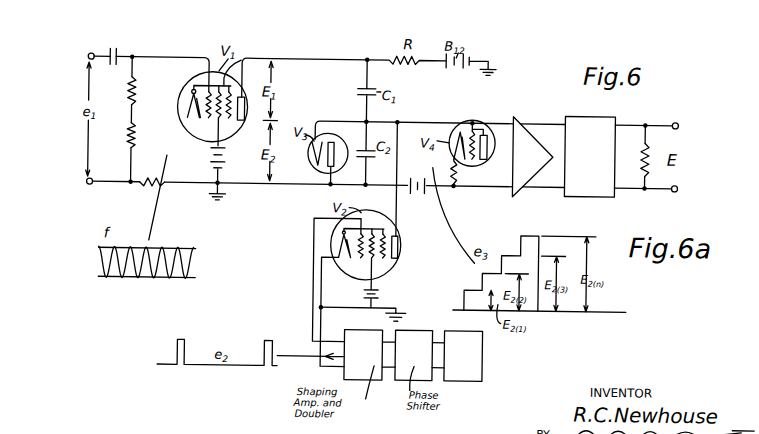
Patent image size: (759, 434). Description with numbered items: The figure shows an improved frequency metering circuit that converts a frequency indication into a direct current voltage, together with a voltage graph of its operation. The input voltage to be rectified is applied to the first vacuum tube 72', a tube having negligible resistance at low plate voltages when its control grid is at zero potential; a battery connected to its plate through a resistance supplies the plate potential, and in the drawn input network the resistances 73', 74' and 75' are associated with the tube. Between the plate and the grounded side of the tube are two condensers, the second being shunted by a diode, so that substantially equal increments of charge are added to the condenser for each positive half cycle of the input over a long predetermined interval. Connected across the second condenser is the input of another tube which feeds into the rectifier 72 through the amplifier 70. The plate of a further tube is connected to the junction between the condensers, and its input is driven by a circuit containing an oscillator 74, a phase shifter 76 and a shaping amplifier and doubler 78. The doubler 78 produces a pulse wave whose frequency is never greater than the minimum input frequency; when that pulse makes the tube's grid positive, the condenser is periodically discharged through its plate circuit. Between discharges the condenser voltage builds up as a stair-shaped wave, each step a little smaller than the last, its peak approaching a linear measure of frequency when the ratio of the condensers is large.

The amplifier 70 is at (519, 121).
The rectifier 72 is at (590, 148).
The vacuum tube V1 72' is at (265, 100).
The resistor 73' is at (149, 91).
The resistor 74' is at (148, 136).
The resistor 75' is at (133, 193).
The oscillator 74 is at (478, 356).
The phase shifter 76 is at (414, 331).
The shaping amplifier and doubler 78 is at (368, 331).